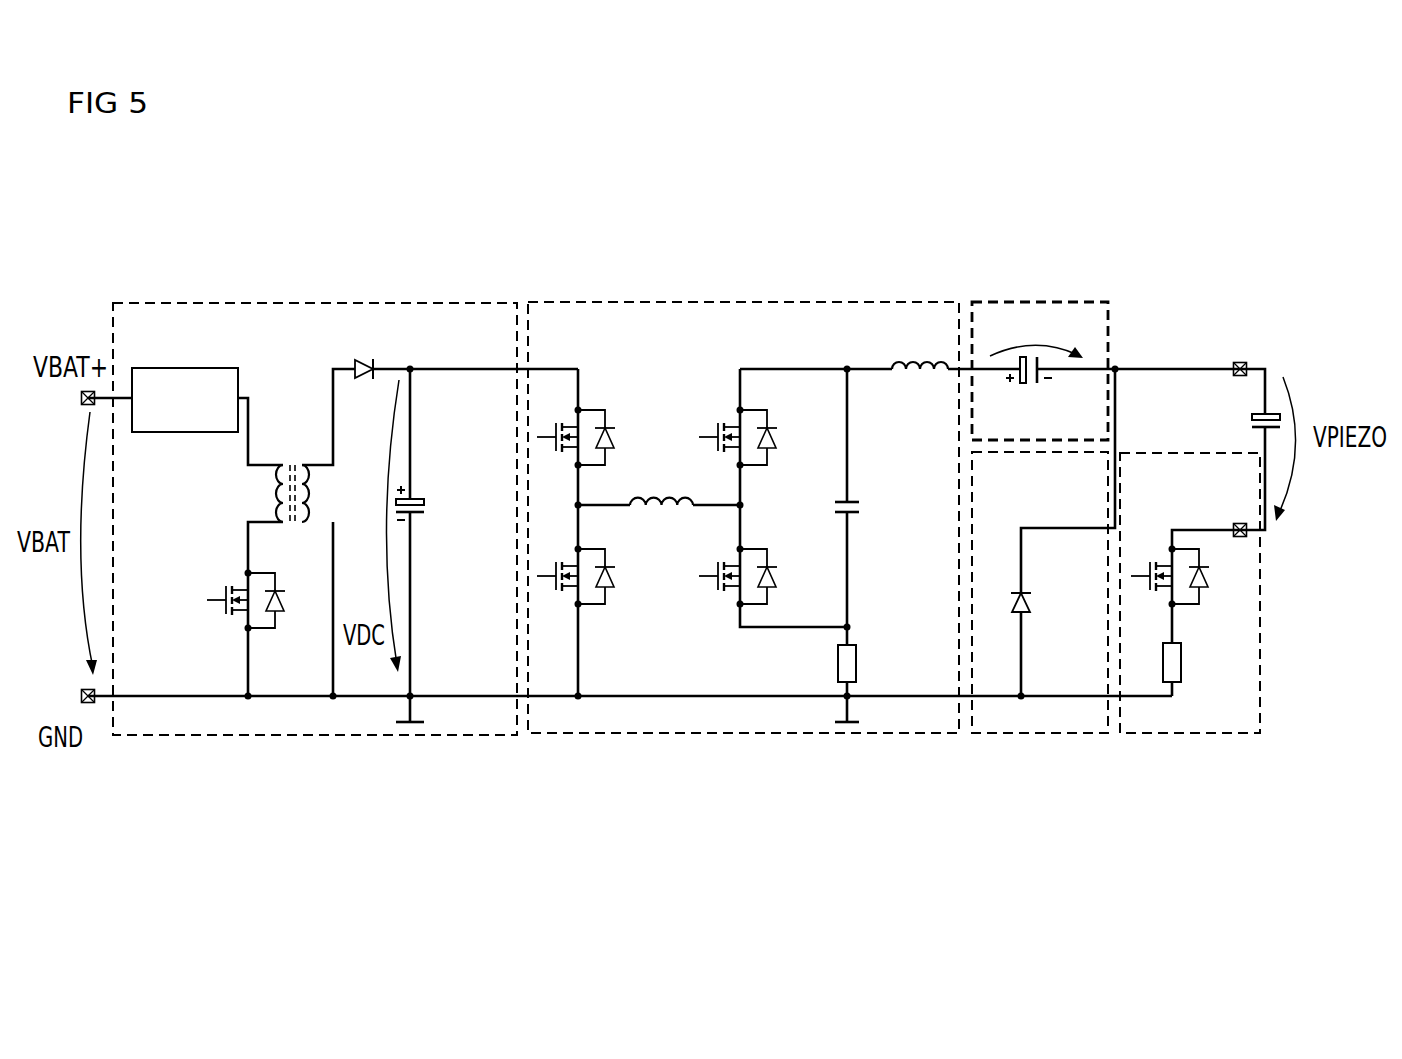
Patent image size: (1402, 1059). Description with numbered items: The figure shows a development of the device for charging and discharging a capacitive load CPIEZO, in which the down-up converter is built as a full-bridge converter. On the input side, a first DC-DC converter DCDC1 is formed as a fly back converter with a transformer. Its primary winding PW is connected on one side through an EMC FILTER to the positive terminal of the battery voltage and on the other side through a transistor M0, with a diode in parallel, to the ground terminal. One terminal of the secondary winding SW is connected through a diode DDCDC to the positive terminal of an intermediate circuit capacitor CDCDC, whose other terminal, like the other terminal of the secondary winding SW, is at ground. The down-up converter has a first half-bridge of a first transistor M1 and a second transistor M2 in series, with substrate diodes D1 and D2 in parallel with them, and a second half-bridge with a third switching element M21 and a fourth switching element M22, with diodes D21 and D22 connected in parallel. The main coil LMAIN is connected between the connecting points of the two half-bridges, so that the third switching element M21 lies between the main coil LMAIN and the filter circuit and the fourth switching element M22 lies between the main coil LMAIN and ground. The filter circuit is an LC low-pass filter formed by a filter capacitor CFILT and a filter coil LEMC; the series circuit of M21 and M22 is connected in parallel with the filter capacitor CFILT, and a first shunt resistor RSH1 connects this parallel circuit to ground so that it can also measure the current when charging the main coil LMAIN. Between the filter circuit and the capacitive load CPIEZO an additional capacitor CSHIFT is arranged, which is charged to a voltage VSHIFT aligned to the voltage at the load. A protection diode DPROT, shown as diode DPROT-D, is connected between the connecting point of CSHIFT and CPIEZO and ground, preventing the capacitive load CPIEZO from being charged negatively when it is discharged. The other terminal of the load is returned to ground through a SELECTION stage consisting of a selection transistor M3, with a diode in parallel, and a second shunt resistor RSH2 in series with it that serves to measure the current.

The first DC-DC converter DCDC1 is at (315, 519).
The voltage VSHIFT is at (1040, 371).
The protection diode DPROT is at (1040, 592).
The selection stage SELECTION is at (1190, 593).
The EMC filter EMC FILTER is at (185, 400).
The primary winding PW is at (250, 493).
The secondary winding SW is at (330, 493).
The transistor M0 is at (266, 601).
The diode DDCDC is at (320, 347).
The intermediate circuit capacitor CDCDC is at (447, 526).
The first transistor M1 is at (575, 422).
The diode D1 is at (600, 413).
The second transistor M2 is at (575, 560).
The diode D2 is at (600, 550).
The third switching element M21 is at (732, 422).
The diode D21 is at (769, 413).
The fourth switching element M22 is at (732, 560).
The diode D22 is at (770, 550).
The main coil LMAIN is at (668, 475).
The filter capacitor CFILT is at (877, 532).
The first shunt resistor RSH1 is at (885, 658).
The filter coil LEMC is at (915, 396).
The additional capacitor CSHIFT is at (1033, 396).
The protection diode DPROT-D is at (1056, 584).
The capacitive load CPIEZO is at (1220, 415).
The selection transistor M3 is at (1193, 573).
The second shunt resistor RSH2 is at (1205, 667).